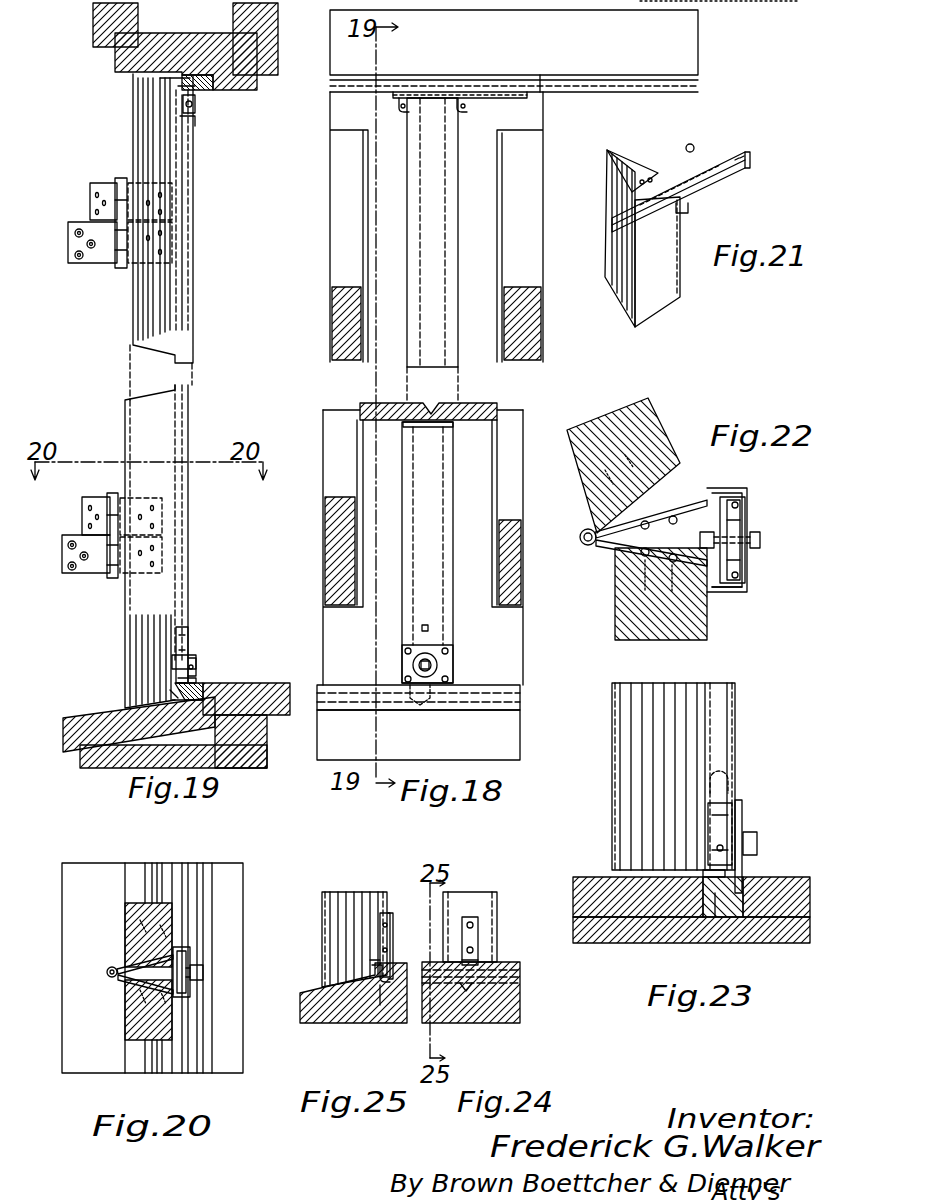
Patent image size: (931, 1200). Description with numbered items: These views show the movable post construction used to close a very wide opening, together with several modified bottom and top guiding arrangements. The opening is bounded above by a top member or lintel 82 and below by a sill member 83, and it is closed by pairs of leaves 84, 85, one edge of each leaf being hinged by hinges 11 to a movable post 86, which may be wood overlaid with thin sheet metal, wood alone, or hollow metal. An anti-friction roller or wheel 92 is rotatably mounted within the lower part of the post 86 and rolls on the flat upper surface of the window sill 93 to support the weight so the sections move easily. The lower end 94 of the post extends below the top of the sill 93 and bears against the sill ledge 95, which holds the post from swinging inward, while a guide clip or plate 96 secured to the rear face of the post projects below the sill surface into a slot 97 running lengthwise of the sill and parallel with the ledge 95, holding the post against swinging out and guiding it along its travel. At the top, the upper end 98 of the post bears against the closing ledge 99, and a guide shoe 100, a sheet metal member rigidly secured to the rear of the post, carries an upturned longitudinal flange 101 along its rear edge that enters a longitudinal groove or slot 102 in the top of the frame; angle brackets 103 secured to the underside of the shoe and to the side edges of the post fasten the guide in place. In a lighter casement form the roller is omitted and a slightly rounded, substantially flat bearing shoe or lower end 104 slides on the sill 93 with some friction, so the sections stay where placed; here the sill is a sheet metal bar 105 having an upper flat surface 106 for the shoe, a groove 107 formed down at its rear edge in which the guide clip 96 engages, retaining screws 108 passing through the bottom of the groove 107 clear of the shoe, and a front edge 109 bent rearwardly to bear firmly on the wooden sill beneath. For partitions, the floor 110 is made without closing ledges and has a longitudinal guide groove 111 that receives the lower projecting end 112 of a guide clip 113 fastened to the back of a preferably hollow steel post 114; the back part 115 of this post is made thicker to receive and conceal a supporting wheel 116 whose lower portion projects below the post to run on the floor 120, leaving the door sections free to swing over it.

In FIG. 19, the hinges 11 is at (100, 192).
In FIG. 22, the hinges 11 is at (590, 547).
In FIG. 20, the hinges 11 is at (110, 968).
In FIG. 19, the top member or lintel 82 is at (175, 55).
In FIG. 18, the top member or lintel 82 is at (618, 55).
In FIG. 19, the sill member 83 is at (120, 738).
In FIG. 18, the leaf 84 is at (385, 415).
In FIG. 22, the leaf 84 is at (625, 625).
In FIG. 20, the leaf 84 is at (125, 1030).
In FIG. 18, the leaf 85 is at (478, 415).
In FIG. 22, the leaf 85 is at (628, 418).
In FIG. 20, the leaf 85 is at (125, 920).
In FIG. 19, the movable post 86 is at (147, 300).
In FIG. 18, the movable post 86 is at (435, 258).
In FIG. 21, the movable post 86 is at (660, 292).
In FIG. 20, the movable post 86 is at (125, 990).
In FIG. 25, the movable post 86 is at (340, 898).
In FIG. 24, the movable post 86 is at (500, 878).
In FIG. 19, the anti-friction roller or wheel 92 is at (188, 632).
In FIG. 18, the anti-friction roller or wheel 92 is at (440, 665).
In FIG. 20, the anti-friction roller or wheel 92 is at (190, 948).
In FIG. 19, the window sill 93 is at (176, 683).
In FIG. 20, the window sill 93 is at (178, 916).
In FIG. 24, the window sill 93 is at (520, 966).
In FIG. 19, the lower end of the post 94 is at (152, 688).
In FIG. 19, the sill ledge 95 is at (165, 699).
In FIG. 25, the sill ledge 95 is at (375, 966).
In FIG. 19, the guide clip or plate 96 is at (196, 668).
In FIG. 18, the guide clip or plate 96 is at (450, 656).
In FIG. 20, the guide clip or plate 96 is at (195, 986).
In FIG. 25, the guide clip or plate 96 is at (390, 935).
In FIG. 24, the guide clip or plate 96 is at (478, 925).
In FIG. 19, the slot 97 is at (196, 680).
In FIG. 18, the slot 97 is at (362, 688).
In FIG. 20, the slot 97 is at (190, 1030).
In FIG. 19, the upper end of the post 98 is at (160, 80).
In FIG. 21, the upper end of the post 98 is at (622, 190).
In FIG. 19, the closing ledge 99 is at (178, 88).
In FIG. 19, the guide shoe 100 is at (197, 96).
In FIG. 21, the guide shoe 100 is at (712, 180).
In FIG. 18, the upturned longitudinal flange 101 is at (470, 91).
In FIG. 21, the upturned longitudinal flange 101 is at (700, 160).
In FIG. 19, the longitudinal groove or slot 102 is at (200, 90).
In FIG. 18, the longitudinal groove or slot 102 is at (556, 88).
In FIG. 21, the longitudinal groove or slot 102 is at (700, 148).
In FIG. 19, the angle brackets 103 is at (180, 118).
In FIG. 18, the angle brackets 103 is at (399, 107).
In FIG. 21, the angle brackets 103 is at (688, 212).
In FIG. 24, the bearing shoe or lower end 104 is at (482, 958).
In FIG. 25, the sheet metal bar 105 is at (382, 990).
In FIG. 25, the upper flat surface 106 is at (372, 957).
In FIG. 25, the groove 107 is at (392, 960).
In FIG. 24, the screws 108 is at (485, 1025).
In FIG. 25, the front edge 109 is at (337, 1020).
In FIG. 23, the floor 110 is at (771, 866).
In FIG. 23, the guide groove 111 is at (722, 940).
In FIG. 23, the lower projecting end 112 is at (740, 882).
In FIG. 22, the guide clip 113 is at (750, 515).
In FIG. 23, the guide clip 113 is at (758, 822).
In FIG. 22, the post 114 is at (705, 515).
In FIG. 23, the post 114 is at (675, 707).
In FIG. 22, the back part of the post 115 is at (725, 595).
In FIG. 23, the back part of the post 115 is at (730, 728).
In FIG. 22, the supporting wheel 116 is at (735, 560).
In FIG. 23, the supporting wheel 116 is at (735, 800).
In FIG. 23, the floor 120 is at (708, 873).